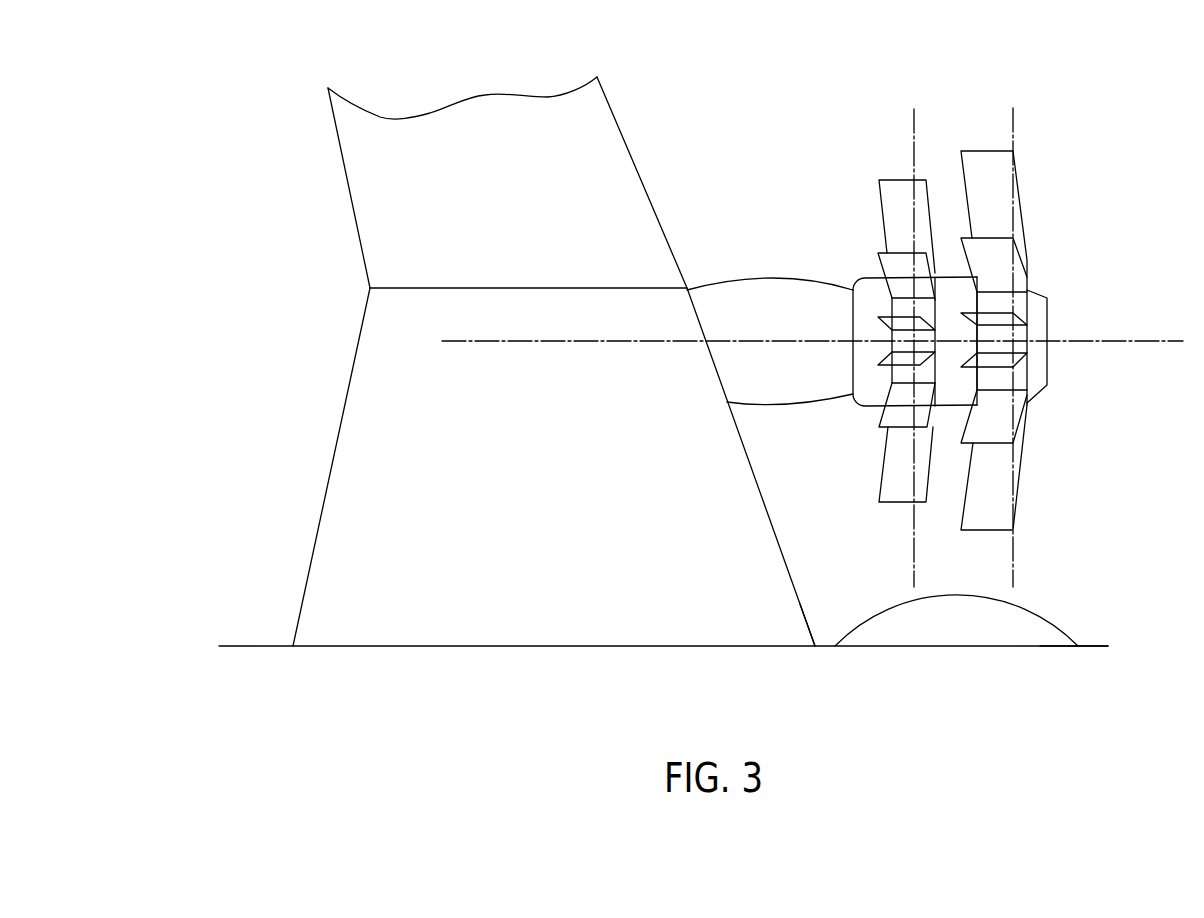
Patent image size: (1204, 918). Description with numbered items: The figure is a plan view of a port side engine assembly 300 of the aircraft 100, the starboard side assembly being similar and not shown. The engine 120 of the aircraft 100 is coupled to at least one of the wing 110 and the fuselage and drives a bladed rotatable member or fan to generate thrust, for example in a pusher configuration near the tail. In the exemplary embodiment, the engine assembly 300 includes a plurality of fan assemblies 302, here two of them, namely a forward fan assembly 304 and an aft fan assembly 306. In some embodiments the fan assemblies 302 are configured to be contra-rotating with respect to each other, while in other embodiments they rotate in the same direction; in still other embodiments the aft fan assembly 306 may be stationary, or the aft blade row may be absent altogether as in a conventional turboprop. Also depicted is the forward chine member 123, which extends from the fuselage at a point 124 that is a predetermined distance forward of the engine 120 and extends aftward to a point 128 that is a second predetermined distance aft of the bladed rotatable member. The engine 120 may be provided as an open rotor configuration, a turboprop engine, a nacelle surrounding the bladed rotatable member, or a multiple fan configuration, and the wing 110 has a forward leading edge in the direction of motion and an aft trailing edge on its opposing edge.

The aircraft 100 is at (770, 86).
The wing 110 is at (623, 193).
The engine 120 is at (733, 290).
The forward chine member 123 is at (1025, 625).
The point 124 is at (1078, 645).
The point 128 is at (835, 645).
The port side engine assembly 300 is at (839, 201).
The fan assemblies 302 is at (1075, 140).
The forward fan assembly 304 is at (1040, 287).
The aft fan assembly 306 is at (927, 308).